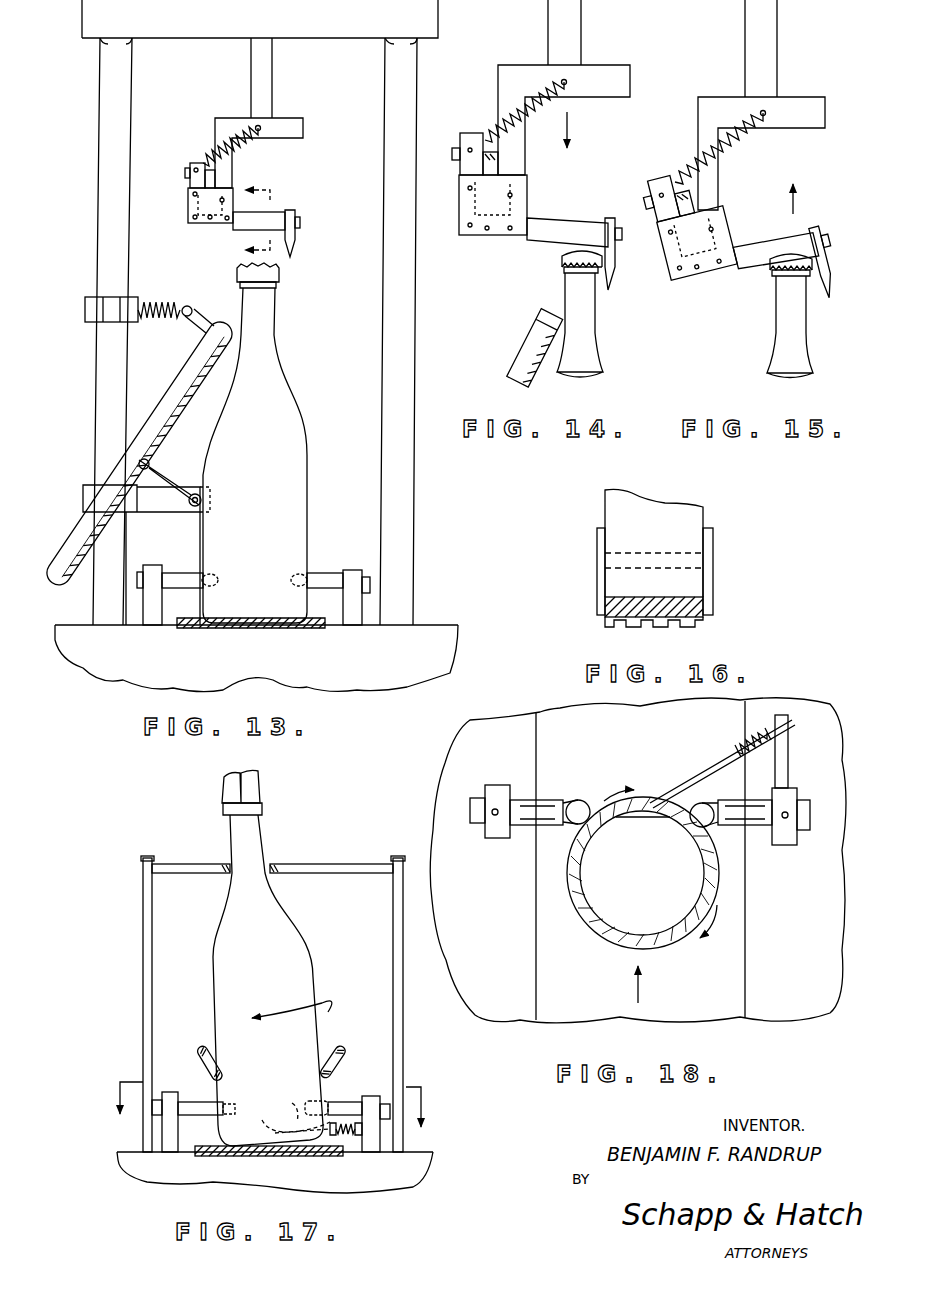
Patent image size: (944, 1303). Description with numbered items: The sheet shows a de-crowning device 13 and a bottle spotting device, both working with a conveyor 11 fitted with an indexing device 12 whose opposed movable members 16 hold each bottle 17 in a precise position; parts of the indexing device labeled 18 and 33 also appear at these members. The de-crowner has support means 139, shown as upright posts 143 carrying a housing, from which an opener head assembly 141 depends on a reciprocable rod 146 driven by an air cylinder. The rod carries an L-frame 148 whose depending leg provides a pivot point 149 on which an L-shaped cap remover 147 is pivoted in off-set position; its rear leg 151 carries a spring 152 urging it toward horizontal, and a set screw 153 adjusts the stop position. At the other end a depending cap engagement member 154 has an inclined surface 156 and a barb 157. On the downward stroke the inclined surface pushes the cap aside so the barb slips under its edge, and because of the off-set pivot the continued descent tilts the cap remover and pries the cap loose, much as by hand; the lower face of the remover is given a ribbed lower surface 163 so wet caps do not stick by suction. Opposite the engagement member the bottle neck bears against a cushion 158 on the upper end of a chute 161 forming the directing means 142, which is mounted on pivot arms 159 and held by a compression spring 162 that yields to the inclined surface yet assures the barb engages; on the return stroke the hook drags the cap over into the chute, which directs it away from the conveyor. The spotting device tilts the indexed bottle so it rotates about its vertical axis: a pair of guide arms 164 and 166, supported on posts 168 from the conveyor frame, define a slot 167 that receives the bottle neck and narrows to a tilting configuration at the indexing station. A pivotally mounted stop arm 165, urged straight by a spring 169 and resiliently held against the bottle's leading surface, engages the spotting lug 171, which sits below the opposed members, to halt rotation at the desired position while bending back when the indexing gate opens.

In FIG. 13, the conveyor 11 is at (212, 632).
In FIG. 18, the conveyor 11 is at (536, 929).
In FIG. 17, the conveyor 11 is at (219, 1153).
In FIG. 13, the indexing device 12 is at (318, 572).
In FIG. 17, the indexing device 12 is at (338, 1098).
In FIG. 13, the de-crowning device 13 is at (320, 243).
In FIG. 13, the movable members 16 is at (257, 207).
In FIG. 18, the movable members 16 is at (500, 770).
In FIG. 17, the movable members 16 is at (185, 1091).
In FIG. 13, the bottles 17 is at (287, 411).
In FIG. 14, the bottles 17 is at (598, 314).
In FIG. 15, the bottles 17 is at (818, 316).
In FIG. 18, the bottles 17 is at (600, 926).
In FIG. 17, the bottles 17 is at (272, 958).
In FIG. 18, the clamp pads 18 is at (588, 800).
In FIG. 17, the clamp pads 18 is at (268, 1115).
In FIG. 18, the clamp arm 33 is at (530, 826).
In FIG. 13, the support means 139 is at (260, 22).
In FIG. 14, the support means 139 is at (427, 106).
In FIG. 13, the opener head assembly 141 is at (240, 175).
In FIG. 14, the opener head assembly 141 is at (542, 164).
In FIG. 13, the directing means 142 is at (139, 447).
In FIG. 13, the upright columns 143 is at (96, 246).
In FIG. 13, the reciprocable rod 146 is at (272, 88).
In FIG. 14, the reciprocable rod 146 is at (564, 32).
In FIG. 15, the reciprocable rod 146 is at (778, 45).
In FIG. 13, the cap remover 147 is at (268, 213).
In FIG. 14, the cap remover 147 is at (550, 221).
In FIG. 15, the cap remover 147 is at (752, 258).
In FIG. 16, the cap remover 147 is at (676, 602).
In FIG. 13, the L-frame 148 is at (240, 118).
In FIG. 14, the L-frame 148 is at (564, 120).
In FIG. 15, the L-frame 148 is at (761, 153).
In FIG. 13, the pivot point 149 is at (222, 200).
In FIG. 14, the pivot point 149 is at (510, 195).
In FIG. 15, the pivot point 149 is at (707, 228).
In FIG. 16, the pivot point 149 is at (705, 566).
In FIG. 13, the rear leg 151 is at (200, 175).
In FIG. 14, the rear leg 151 is at (471, 138).
In FIG. 15, the rear leg 151 is at (658, 182).
In FIG. 13, the spring 152 is at (232, 146).
In FIG. 14, the spring 152 is at (508, 112).
In FIG. 15, the spring 152 is at (730, 131).
In FIG. 14, the set screw 153 is at (456, 158).
In FIG. 13, the cap engagement member 154 is at (292, 233).
In FIG. 14, the cap engagement member 154 is at (612, 281).
In FIG. 15, the cap engagement member 154 is at (828, 256).
In FIG. 14, the inclined surface 156 is at (597, 297).
In FIG. 15, the inclined surface 156 is at (815, 280).
In FIG. 14, the barb 157 is at (600, 248).
In FIG. 14, the cushion 158 is at (560, 320).
In FIG. 13, the arms 159 is at (165, 476).
In FIG. 13, the chute 161 is at (140, 440).
In FIG. 13, the compression spring 162 is at (160, 303).
In FIG. 17, the compression spring 162 is at (249, 986).
In FIG. 16, the ribbed lower surface 163 is at (690, 626).
In FIG. 17, the guide arm 164 is at (195, 864).
In FIG. 18, the stop arm 165 is at (698, 776).
In FIG. 17, the stop arm 165 is at (319, 1161).
In FIG. 17, the guide arm 166 is at (345, 864).
In FIG. 17, the slot 167 is at (265, 864).
In FIG. 17, the posts 168 is at (143, 962).
In FIG. 18, the spring 169 is at (744, 746).
In FIG. 17, the spring 169 is at (350, 1138).
In FIG. 18, the spotting lug 171 is at (645, 790).
In FIG. 17, the spotting lug 171 is at (284, 1120).